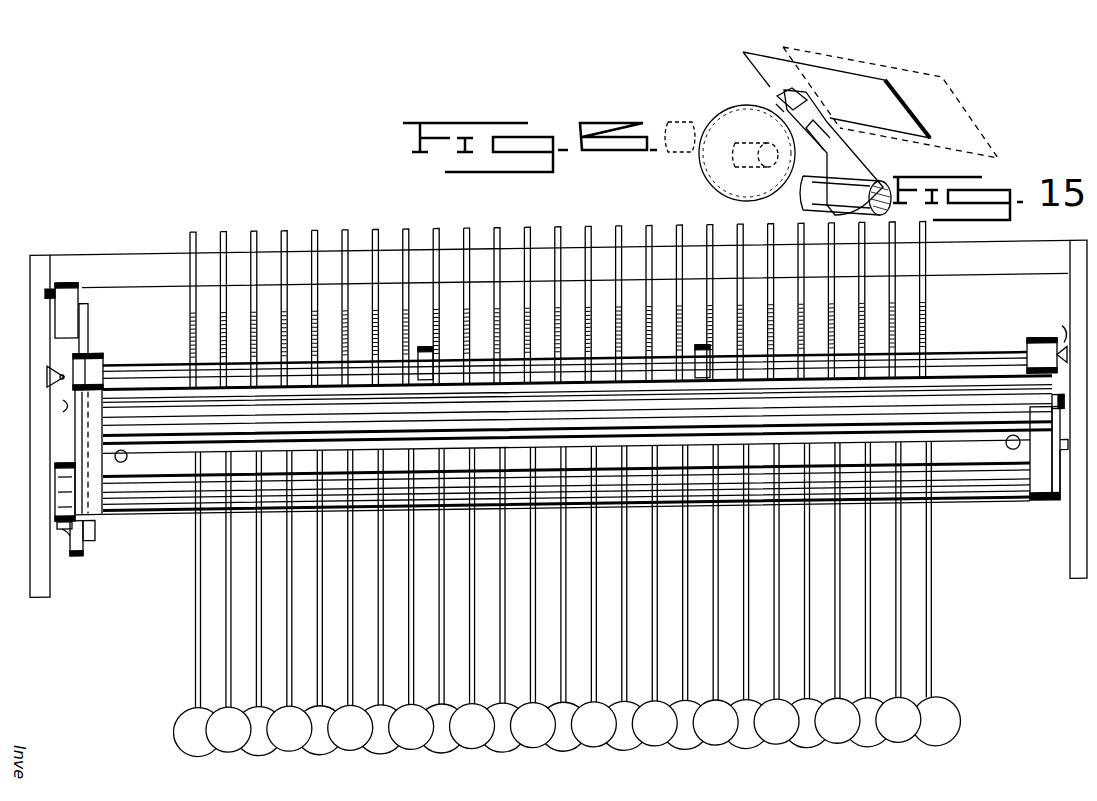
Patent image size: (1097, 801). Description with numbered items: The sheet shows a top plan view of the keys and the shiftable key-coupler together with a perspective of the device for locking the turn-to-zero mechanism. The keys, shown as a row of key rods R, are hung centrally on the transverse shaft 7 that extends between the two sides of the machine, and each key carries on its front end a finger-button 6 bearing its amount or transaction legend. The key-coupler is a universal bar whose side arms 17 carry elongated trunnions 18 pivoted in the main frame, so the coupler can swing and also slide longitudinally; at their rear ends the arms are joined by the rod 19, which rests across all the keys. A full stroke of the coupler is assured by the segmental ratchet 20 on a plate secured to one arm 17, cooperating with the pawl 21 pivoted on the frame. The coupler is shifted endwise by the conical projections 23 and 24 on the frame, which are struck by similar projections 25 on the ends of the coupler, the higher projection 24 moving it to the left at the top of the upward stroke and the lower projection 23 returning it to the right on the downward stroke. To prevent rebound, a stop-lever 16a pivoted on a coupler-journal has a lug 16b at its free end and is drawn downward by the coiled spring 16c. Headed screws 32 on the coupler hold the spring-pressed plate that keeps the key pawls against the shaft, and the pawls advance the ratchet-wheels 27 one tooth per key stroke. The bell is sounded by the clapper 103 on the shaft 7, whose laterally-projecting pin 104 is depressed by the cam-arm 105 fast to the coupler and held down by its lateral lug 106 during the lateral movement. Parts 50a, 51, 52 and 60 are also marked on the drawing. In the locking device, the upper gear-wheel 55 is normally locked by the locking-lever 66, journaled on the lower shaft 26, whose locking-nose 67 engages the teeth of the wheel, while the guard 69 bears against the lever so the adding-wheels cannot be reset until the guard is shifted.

In FIG. 3, the pawl 21 is at (57, 314).
In FIG. 3, the clapper 103 is at (88, 315).
In FIG. 3, the segmental ratchet 20 is at (72, 348).
In FIG. 3, the rod 19 is at (154, 364).
In FIG. 3, the conical projection 23 is at (47, 373).
In FIG. 3, the projection 25 is at (62, 378).
In FIG. 3, the side arm 17 is at (78, 437).
In FIG. 3, the trunnion 18 is at (53, 485).
In FIG. 3, the sleeve 50a is at (62, 495).
In FIG. 3, the washer 51 is at (56, 523).
In FIG. 3, the spring 52 is at (68, 524).
In FIG. 3, the pin 104 is at (95, 531).
In FIG. 3, the cam-arm 105 is at (72, 553).
In FIG. 3, the lateral lug 106 is at (84, 553).
In FIG. 3, the headed screw 32 is at (127, 455).
In FIG. 3, the ratchet-wheel 27 is at (560, 443).
In FIG. 3, the transverse shaft 7 is at (372, 503).
In FIG. 3, the key rods R is at (355, 627).
In FIG. 3, the finger-button 6 is at (352, 746).
In FIG. 3, the conical projection 24 is at (1068, 350).
In FIG. 3, the lug 16b is at (1060, 408).
In FIG. 3, the stop-lever 16a is at (1066, 432).
In FIG. 3, the coiled spring 16c is at (1068, 462).
In FIG. 15, the upper gear-wheel 55 is at (747, 153).
In FIG. 15, the lower shaft 26 is at (683, 147).
In FIG. 15, the guard 69 is at (870, 102).
In FIG. 15, the locking-lever 66 is at (830, 154).
In FIG. 15, the clip 60 is at (785, 90).
In FIG. 15, the locking-nose 67 is at (780, 108).